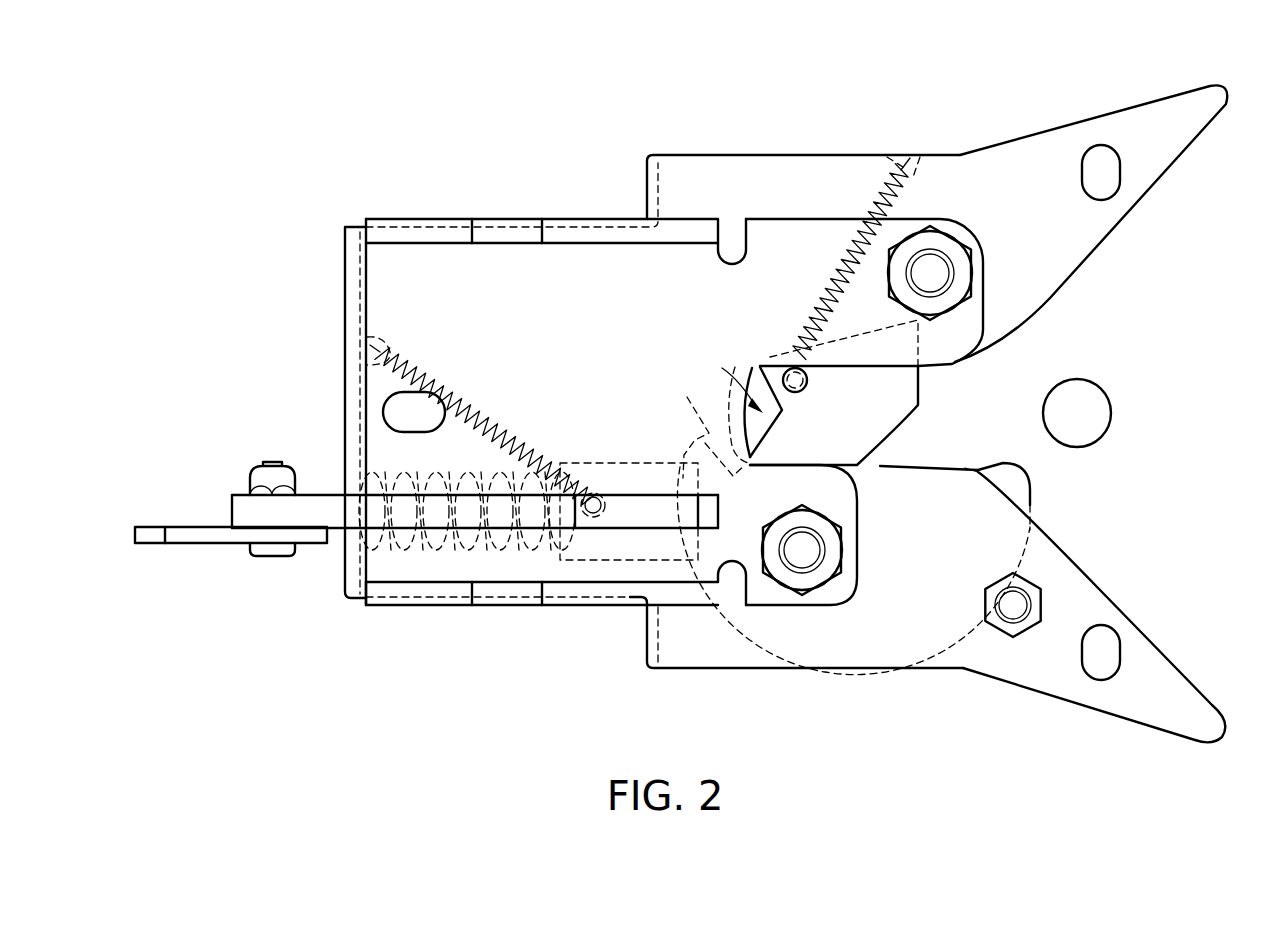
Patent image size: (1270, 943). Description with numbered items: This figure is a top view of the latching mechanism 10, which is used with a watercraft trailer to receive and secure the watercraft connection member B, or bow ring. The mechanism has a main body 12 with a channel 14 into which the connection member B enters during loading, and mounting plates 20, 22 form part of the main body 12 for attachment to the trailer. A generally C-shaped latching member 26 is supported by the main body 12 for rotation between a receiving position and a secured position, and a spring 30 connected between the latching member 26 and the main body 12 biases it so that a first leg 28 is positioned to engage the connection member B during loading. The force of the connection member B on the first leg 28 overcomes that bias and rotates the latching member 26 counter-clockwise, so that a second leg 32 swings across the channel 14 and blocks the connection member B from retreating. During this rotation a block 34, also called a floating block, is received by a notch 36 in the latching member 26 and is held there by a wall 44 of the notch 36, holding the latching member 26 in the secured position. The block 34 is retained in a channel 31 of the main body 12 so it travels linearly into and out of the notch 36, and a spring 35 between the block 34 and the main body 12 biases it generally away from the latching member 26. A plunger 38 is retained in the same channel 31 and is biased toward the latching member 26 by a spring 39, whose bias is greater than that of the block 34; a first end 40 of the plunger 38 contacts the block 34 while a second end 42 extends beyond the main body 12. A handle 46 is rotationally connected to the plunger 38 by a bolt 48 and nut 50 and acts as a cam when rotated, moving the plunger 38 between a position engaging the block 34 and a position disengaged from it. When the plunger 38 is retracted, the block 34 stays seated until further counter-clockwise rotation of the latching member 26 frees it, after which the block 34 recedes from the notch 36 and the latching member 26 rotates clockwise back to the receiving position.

The latching mechanism 10 is at (1030, 78).
The main body 12 is at (1138, 207).
The channel 14 is at (908, 412).
The mounting plate 20 is at (568, 219).
The mounting plate 22 is at (521, 607).
The latching member 26 is at (853, 660).
The first leg 28 is at (920, 386).
The spring 30 is at (868, 200).
The channel 31 is at (606, 530).
The second leg 32 is at (1050, 558).
The block 34 is at (640, 512).
The spring 35 is at (538, 420).
The notch 36 is at (733, 400).
The plunger 38 is at (325, 508).
The spring 39 is at (445, 550).
The first end 40 is at (572, 560).
The second end 42 is at (240, 512).
The wall 44 is at (711, 423).
The handle 46 is at (140, 537).
The bolt 48 is at (268, 556).
The nut 50 is at (256, 462).
The watercraft connection member B is at (1103, 440).